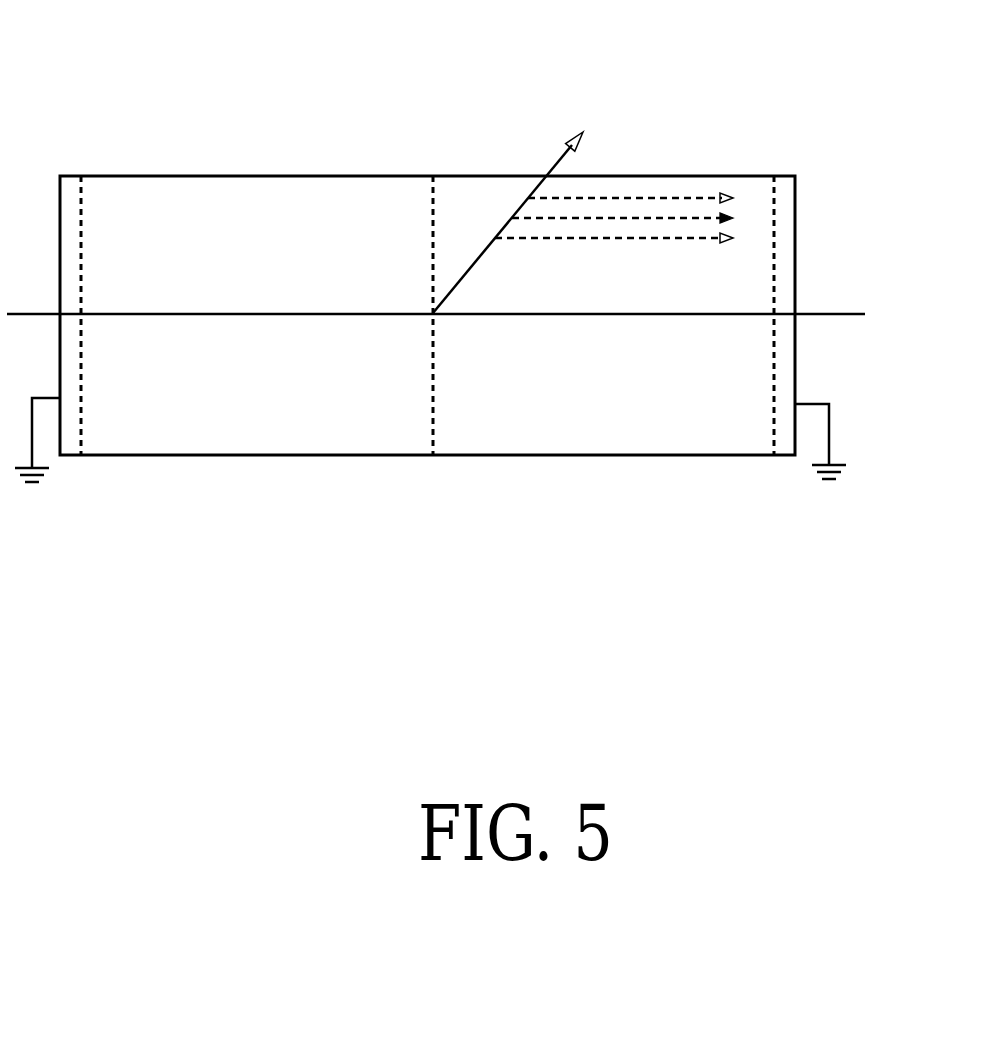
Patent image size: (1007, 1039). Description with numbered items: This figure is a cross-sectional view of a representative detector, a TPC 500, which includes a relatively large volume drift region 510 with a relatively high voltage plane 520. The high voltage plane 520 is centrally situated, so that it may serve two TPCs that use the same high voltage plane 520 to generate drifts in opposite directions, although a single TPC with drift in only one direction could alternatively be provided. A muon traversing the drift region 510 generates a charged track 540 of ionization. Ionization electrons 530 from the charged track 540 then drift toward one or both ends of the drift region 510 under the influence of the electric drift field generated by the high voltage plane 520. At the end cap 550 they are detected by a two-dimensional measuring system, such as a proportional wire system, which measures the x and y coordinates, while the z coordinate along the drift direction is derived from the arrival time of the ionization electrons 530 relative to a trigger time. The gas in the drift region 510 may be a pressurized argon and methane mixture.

The TPC 500 is at (436, 301).
The drift region 510 is at (233, 428).
The high voltage plane 520 is at (441, 427).
The ionization electrons 530 is at (614, 242).
The charged track 540 is at (545, 195).
The end cap 550 is at (91, 449).